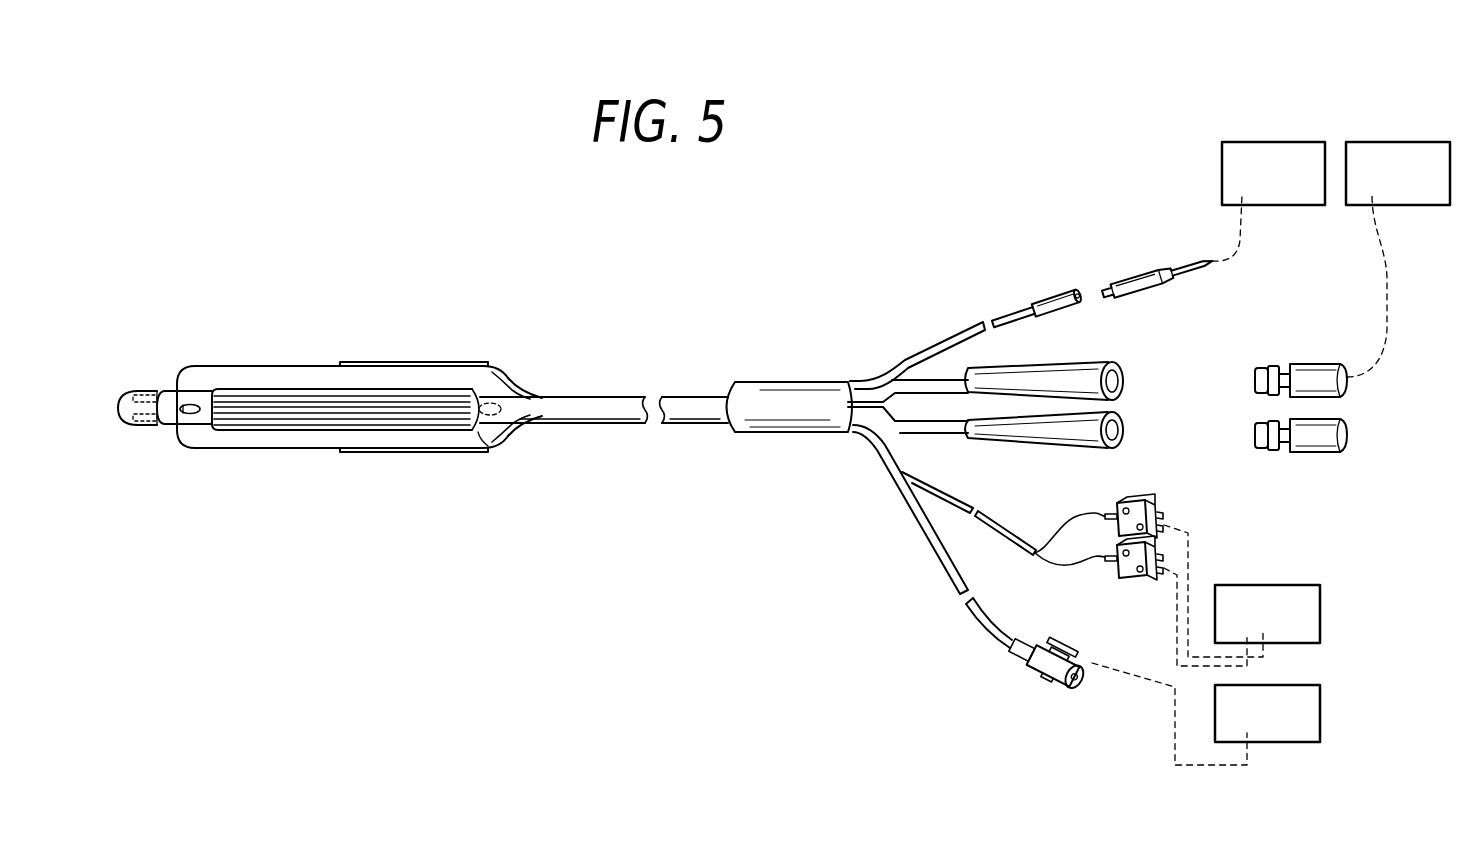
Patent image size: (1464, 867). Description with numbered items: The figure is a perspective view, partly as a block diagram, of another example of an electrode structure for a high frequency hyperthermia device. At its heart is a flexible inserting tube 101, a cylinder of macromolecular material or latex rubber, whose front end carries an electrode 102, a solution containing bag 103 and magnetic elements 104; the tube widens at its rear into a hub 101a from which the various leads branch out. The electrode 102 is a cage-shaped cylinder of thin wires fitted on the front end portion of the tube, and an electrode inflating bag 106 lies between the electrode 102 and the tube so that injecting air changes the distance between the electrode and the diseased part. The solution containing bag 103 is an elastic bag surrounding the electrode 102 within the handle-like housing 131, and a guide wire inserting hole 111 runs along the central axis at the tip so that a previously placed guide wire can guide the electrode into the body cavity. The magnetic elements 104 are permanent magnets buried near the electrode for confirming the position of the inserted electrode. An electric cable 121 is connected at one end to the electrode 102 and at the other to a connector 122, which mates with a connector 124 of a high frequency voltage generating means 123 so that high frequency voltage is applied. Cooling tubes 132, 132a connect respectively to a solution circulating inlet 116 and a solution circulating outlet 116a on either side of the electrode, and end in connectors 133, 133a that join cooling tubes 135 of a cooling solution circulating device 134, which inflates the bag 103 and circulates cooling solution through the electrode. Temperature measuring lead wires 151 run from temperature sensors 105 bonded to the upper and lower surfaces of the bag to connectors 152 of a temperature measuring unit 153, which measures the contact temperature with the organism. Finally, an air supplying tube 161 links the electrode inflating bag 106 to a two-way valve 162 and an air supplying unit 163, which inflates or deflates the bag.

The inserting tube 101 is at (610, 397).
The hub 101a is at (773, 388).
The electrode 102 is at (307, 428).
The solution containing bag 103 is at (315, 362).
The magnetic elements 104 is at (142, 394).
The temperature sensors 105 is at (510, 370).
The electrode inflating bag 106 is at (483, 438).
The guide wire inserting hole 111 is at (120, 412).
The solution circulating inlet 116 is at (190, 418).
The solution circulating outlet 116a is at (503, 392).
The electric cable 121 is at (935, 337).
The connector 122 is at (1050, 305).
The high frequency voltage generating means 123 is at (1262, 141).
The connector 124 is at (1137, 283).
The handle 131 is at (248, 372).
The cooling tube 132 is at (950, 380).
The cooling tube 132a is at (952, 433).
The connector 133 is at (1088, 370).
The connector 133a is at (1045, 441).
The cooling solution circulating device 134 is at (1377, 141).
The cooling tubes 135 is at (1310, 363).
The temperature measuring lead wires 151 is at (1010, 536).
The connectors 152 is at (1143, 499).
The temperature measuring unit 153 is at (1322, 610).
The air supplying tube 161 is at (954, 572).
The two-way valve 162 is at (1040, 652).
The air supplying unit 163 is at (1322, 729).